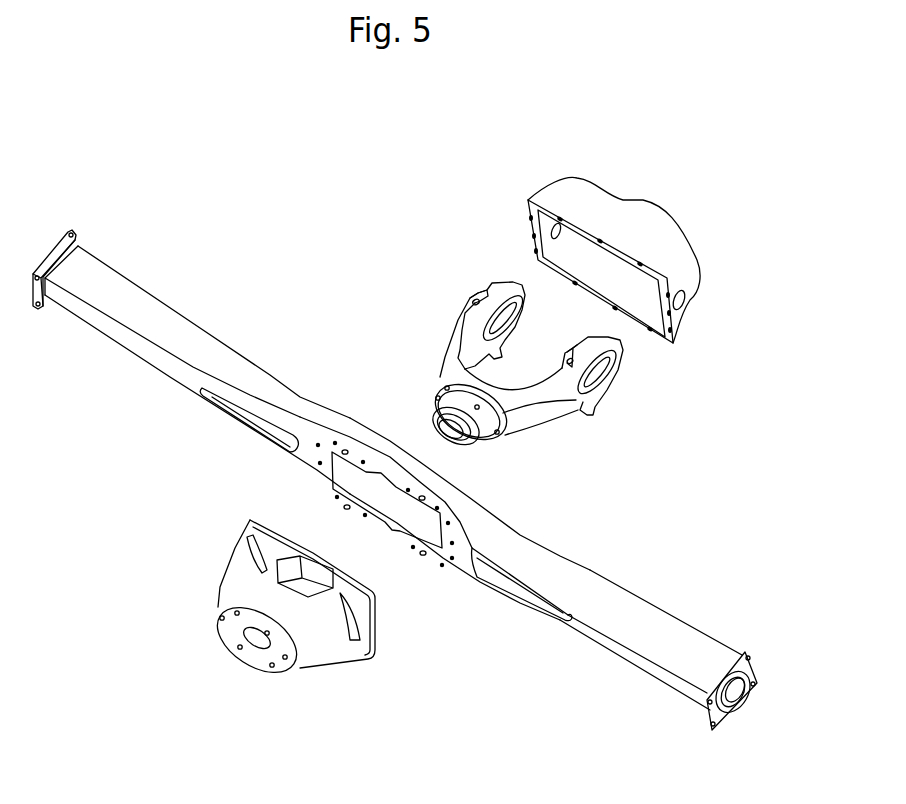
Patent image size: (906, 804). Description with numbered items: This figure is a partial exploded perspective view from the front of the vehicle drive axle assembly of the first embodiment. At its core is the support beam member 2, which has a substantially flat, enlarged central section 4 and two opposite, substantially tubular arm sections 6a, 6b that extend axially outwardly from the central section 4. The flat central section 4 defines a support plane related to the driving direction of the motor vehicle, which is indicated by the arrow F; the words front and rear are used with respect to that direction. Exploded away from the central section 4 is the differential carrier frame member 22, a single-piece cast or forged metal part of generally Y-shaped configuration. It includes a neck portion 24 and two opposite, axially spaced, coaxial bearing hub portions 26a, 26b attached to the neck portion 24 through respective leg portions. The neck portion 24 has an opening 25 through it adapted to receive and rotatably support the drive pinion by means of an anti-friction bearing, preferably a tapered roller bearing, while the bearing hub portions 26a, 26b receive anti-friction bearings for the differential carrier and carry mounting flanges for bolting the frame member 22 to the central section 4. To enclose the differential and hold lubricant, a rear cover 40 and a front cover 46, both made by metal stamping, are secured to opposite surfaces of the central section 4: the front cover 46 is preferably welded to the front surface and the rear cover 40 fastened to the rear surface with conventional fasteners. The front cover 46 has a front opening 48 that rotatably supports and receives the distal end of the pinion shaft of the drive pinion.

The support beam member 2 is at (399, 480).
The central section 4 is at (363, 522).
The tubular arm section 6a is at (143, 279).
The tubular arm section 6b is at (702, 617).
The differential carrier frame member 22 is at (542, 363).
The neck portion 24 is at (488, 449).
The opening 25 is at (457, 429).
The bearing hub portion 26a is at (486, 280).
The bearing hub portion 26b is at (619, 384).
The rear cover 40 is at (684, 235).
The front cover 46 is at (290, 627).
The front opening 48 is at (255, 652).
The arrow indicating driving direction F is at (168, 736).